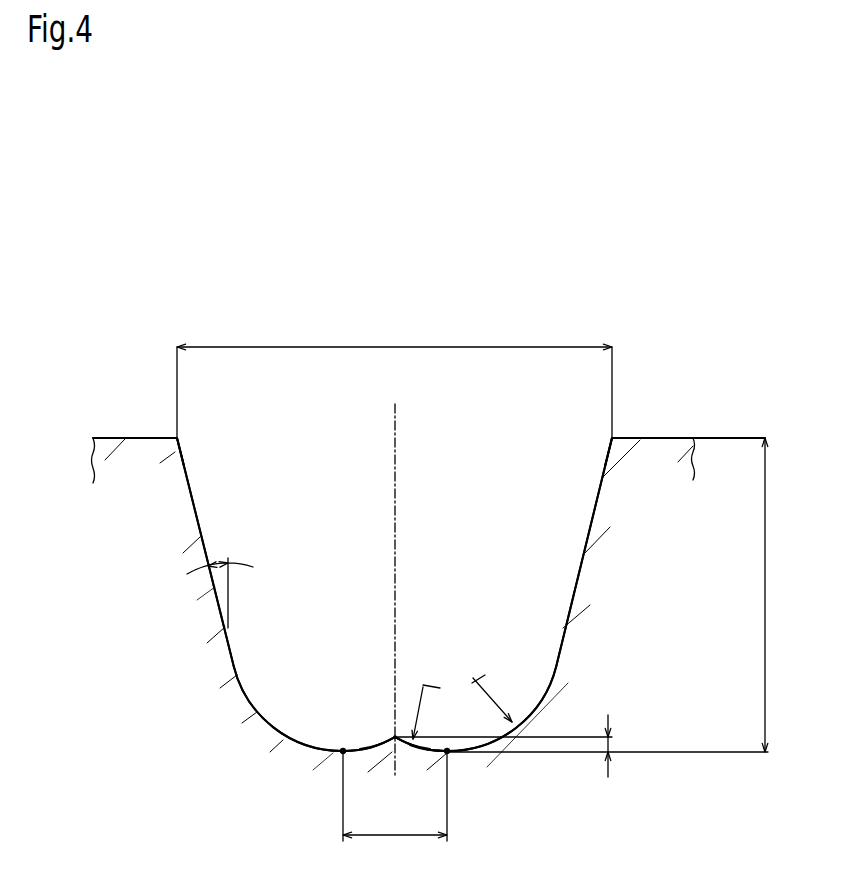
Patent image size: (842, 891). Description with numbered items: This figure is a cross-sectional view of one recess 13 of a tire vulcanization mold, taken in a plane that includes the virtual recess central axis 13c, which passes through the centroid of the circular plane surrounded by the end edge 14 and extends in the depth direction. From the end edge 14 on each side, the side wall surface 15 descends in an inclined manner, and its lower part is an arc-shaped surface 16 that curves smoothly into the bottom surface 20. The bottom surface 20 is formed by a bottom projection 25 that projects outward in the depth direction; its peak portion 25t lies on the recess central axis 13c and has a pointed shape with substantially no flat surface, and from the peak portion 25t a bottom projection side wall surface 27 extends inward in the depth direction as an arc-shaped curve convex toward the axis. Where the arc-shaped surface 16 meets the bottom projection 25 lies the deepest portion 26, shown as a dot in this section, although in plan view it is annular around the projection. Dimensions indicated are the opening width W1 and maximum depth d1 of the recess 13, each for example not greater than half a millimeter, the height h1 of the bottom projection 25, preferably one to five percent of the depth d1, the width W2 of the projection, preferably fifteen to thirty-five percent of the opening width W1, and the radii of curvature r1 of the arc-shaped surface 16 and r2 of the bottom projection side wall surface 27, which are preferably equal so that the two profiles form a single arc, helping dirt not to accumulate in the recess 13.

The recess 13 is at (323, 467).
The recess central axis 13c is at (393, 579).
The end edge 14 is at (177, 437).
The side wall surface 15 is at (190, 500).
The arc-shaped surface 16 is at (262, 722).
The bottom surface 20 is at (357, 741).
The bottom projection 25 is at (385, 729).
The peak portion 25t is at (395, 736).
The deepest portion 26 is at (341, 753).
The bottom projection side wall surface 27 is at (441, 749).
The opening width W1 is at (394, 379).
The width of the bottom projection W2 is at (395, 807).
The maximum depth d1 is at (620, 595).
The height of the bottom projection h1 is at (521, 746).
The radius of curvature of the arc-shaped surface r1 is at (490, 690).
The radius of curvature of the bottom projection side wall surface r2 is at (436, 703).